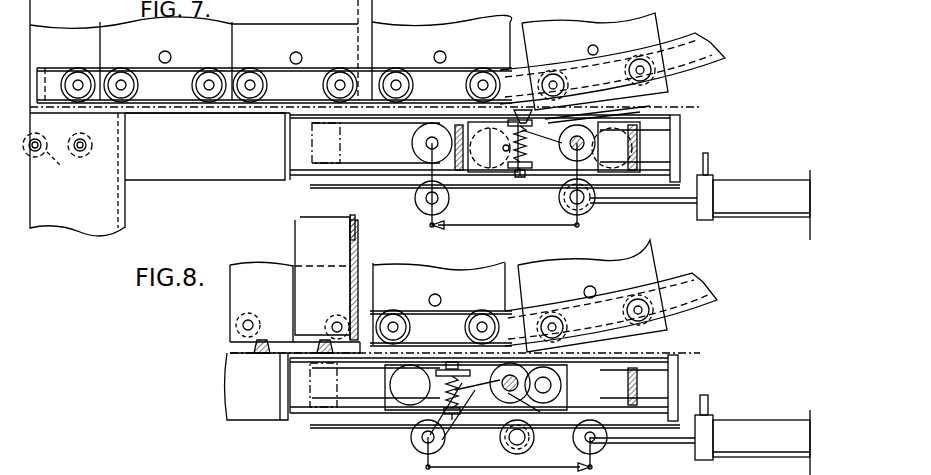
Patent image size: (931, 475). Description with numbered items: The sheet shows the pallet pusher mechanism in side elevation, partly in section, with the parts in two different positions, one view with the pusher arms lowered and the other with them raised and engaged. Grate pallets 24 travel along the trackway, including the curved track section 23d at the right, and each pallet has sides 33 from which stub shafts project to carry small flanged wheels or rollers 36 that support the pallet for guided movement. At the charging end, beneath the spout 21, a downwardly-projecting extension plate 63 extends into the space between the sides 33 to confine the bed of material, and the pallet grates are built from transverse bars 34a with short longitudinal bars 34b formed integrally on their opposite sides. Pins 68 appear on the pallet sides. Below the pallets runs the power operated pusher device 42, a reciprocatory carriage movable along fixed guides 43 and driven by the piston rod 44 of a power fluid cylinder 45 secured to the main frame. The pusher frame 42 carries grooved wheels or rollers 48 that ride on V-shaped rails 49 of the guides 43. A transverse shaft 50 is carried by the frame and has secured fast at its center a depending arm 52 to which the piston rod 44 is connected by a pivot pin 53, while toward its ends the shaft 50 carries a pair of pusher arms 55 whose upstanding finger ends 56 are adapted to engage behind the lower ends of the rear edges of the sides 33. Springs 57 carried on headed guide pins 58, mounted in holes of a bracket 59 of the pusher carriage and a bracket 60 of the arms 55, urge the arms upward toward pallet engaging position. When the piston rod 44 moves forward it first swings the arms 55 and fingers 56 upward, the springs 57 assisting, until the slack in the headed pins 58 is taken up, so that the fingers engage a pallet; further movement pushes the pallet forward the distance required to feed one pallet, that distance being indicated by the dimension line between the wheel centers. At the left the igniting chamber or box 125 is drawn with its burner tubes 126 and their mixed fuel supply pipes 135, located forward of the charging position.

In FIG. 7, the spout 21 is at (355, 235).
In FIG. 8, the spout 21 is at (358, 238).
In FIG. 7, the curved track section 23d is at (712, 46).
In FIG. 8, the curved track section 23d is at (705, 283).
In FIG. 7, the grate pallet 24 is at (648, 35).
In FIG. 8, the grate pallet 24 is at (650, 259).
In FIG. 7, the side 33 is at (535, 35).
In FIG. 8, the side 33 is at (240, 292).
In FIG. 8, the transverse bar 34a is at (272, 382).
In FIG. 8, the longitudinal bar 34b is at (264, 338).
In FIG. 7, the flanged wheel 36 is at (636, 72).
In FIG. 7, the pusher device 42 is at (640, 143).
In FIG. 8, the pusher device 42 is at (372, 457).
In FIG. 7, the fixed guide 43 is at (321, 122).
In FIG. 8, the fixed guide 43 is at (340, 376).
In FIG. 7, the piston rod 44 is at (628, 199).
In FIG. 8, the piston rod 44 is at (648, 444).
In FIG. 7, the power fluid cylinder 45 is at (748, 183).
In FIG. 8, the power fluid cylinder 45 is at (738, 455).
In FIG. 8, the grooved wheel 48 is at (530, 410).
In FIG. 7, the V-shaped rail 49 is at (640, 176).
In FIG. 8, the V-shaped rail 49 is at (640, 415).
In FIG. 8, the transverse shaft 50 is at (500, 383).
In FIG. 7, the depending arm 52 is at (598, 185).
In FIG. 8, the depending arm 52 is at (597, 455).
In FIG. 7, the pivot pin 53 is at (566, 201).
In FIG. 7, the pusher arm 55 is at (556, 160).
In FIG. 8, the pusher arm 55 is at (480, 405).
In FIG. 7, the finger end 56 is at (512, 118).
In FIG. 8, the finger end 56 is at (516, 352).
In FIG. 7, the spring 57 is at (512, 168).
In FIG. 8, the spring 57 is at (441, 410).
In FIG. 7, the headed guide pin 58 is at (522, 110).
In FIG. 8, the headed guide pin 58 is at (452, 362).
In FIG. 7, the bracket 59 is at (524, 170).
In FIG. 8, the bracket 59 is at (452, 418).
In FIG. 7, the bracket 60 is at (597, 113).
In FIG. 8, the bracket 60 is at (440, 370).
In FIG. 8, the extension plate 63 is at (350, 291).
In FIG. 7, the pin 68 is at (595, 50).
In FIG. 8, the pin 68 is at (595, 290).
In FIG. 7, the igniting chamber 125 is at (125, 203).
In FIG. 7, the burner tube 126 is at (66, 167).
In FIG. 7, the mixed fuel supply pipe 135 is at (79, 138).